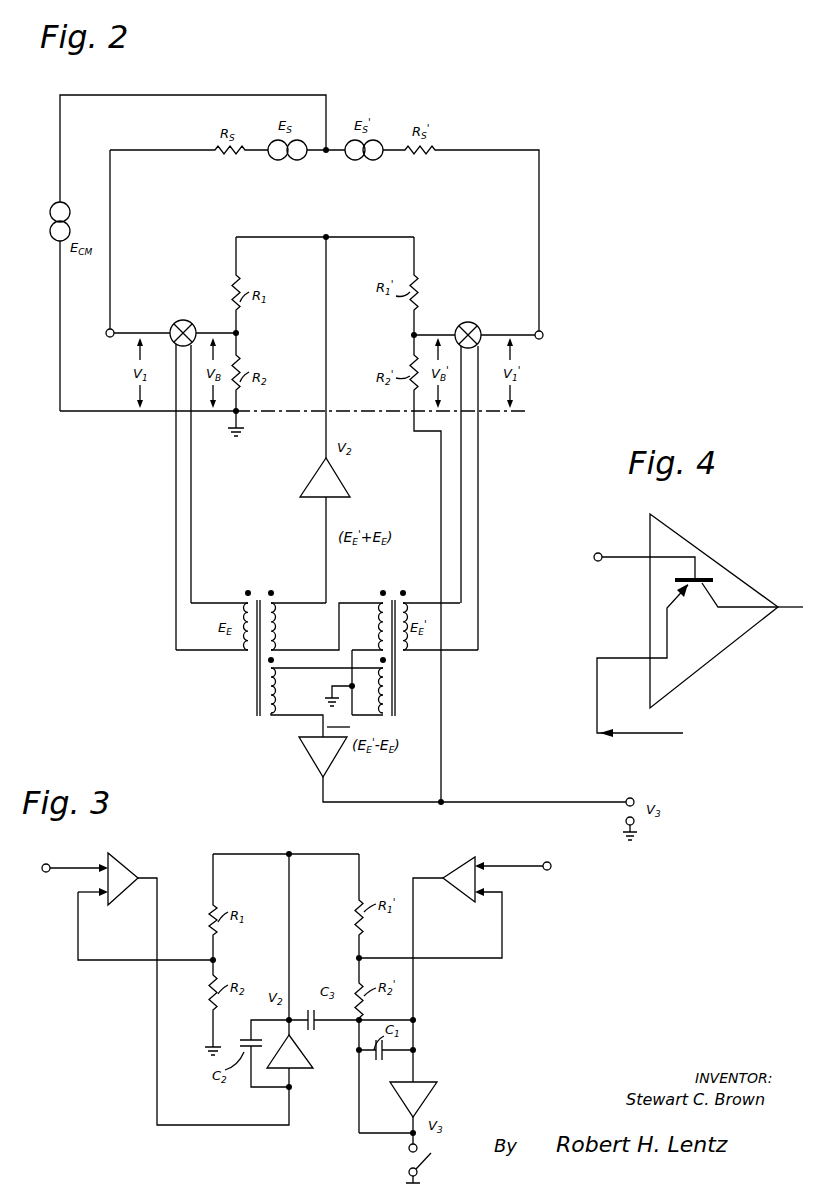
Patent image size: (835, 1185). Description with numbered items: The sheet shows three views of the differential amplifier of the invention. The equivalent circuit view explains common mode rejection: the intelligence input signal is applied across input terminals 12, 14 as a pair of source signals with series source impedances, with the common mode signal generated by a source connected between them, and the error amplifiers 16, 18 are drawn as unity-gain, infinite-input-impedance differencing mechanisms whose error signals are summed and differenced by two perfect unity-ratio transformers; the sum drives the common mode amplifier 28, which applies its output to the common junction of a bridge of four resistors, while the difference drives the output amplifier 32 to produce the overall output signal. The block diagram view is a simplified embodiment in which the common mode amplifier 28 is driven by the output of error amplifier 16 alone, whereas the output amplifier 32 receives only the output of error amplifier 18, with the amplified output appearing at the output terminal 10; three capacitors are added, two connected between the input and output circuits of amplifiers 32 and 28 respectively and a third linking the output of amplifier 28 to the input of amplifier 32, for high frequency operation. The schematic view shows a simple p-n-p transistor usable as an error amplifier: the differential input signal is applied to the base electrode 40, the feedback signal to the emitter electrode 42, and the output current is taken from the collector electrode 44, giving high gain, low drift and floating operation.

In FIG. 3, the output terminals 10 is at (427, 1158).
In FIG. 2, the input terminal 12 is at (106, 338).
In FIG. 3, the input terminal 12 is at (46, 873).
In FIG. 2, the input terminal 14 is at (544, 336).
In FIG. 3, the input terminal 14 is at (548, 871).
In FIG. 2, the error amplifier 16 is at (200, 312).
In FIG. 3, the error amplifier 16 is at (121, 871).
In FIG. 2, the error amplifier 18 is at (478, 323).
In FIG. 3, the error amplifier 18 is at (466, 868).
In FIG. 2, the common mode amplifier 28 is at (334, 484).
In FIG. 3, the common mode amplifier 28 is at (298, 1057).
In FIG. 2, the output amplifier 32 is at (322, 753).
In FIG. 3, the output amplifier 32 is at (421, 1099).
In FIG. 4, the base electrode 40 is at (698, 568).
In FIG. 4, the emitter electrode 42 is at (676, 609).
In FIG. 4, the collector electrode 44 is at (705, 608).